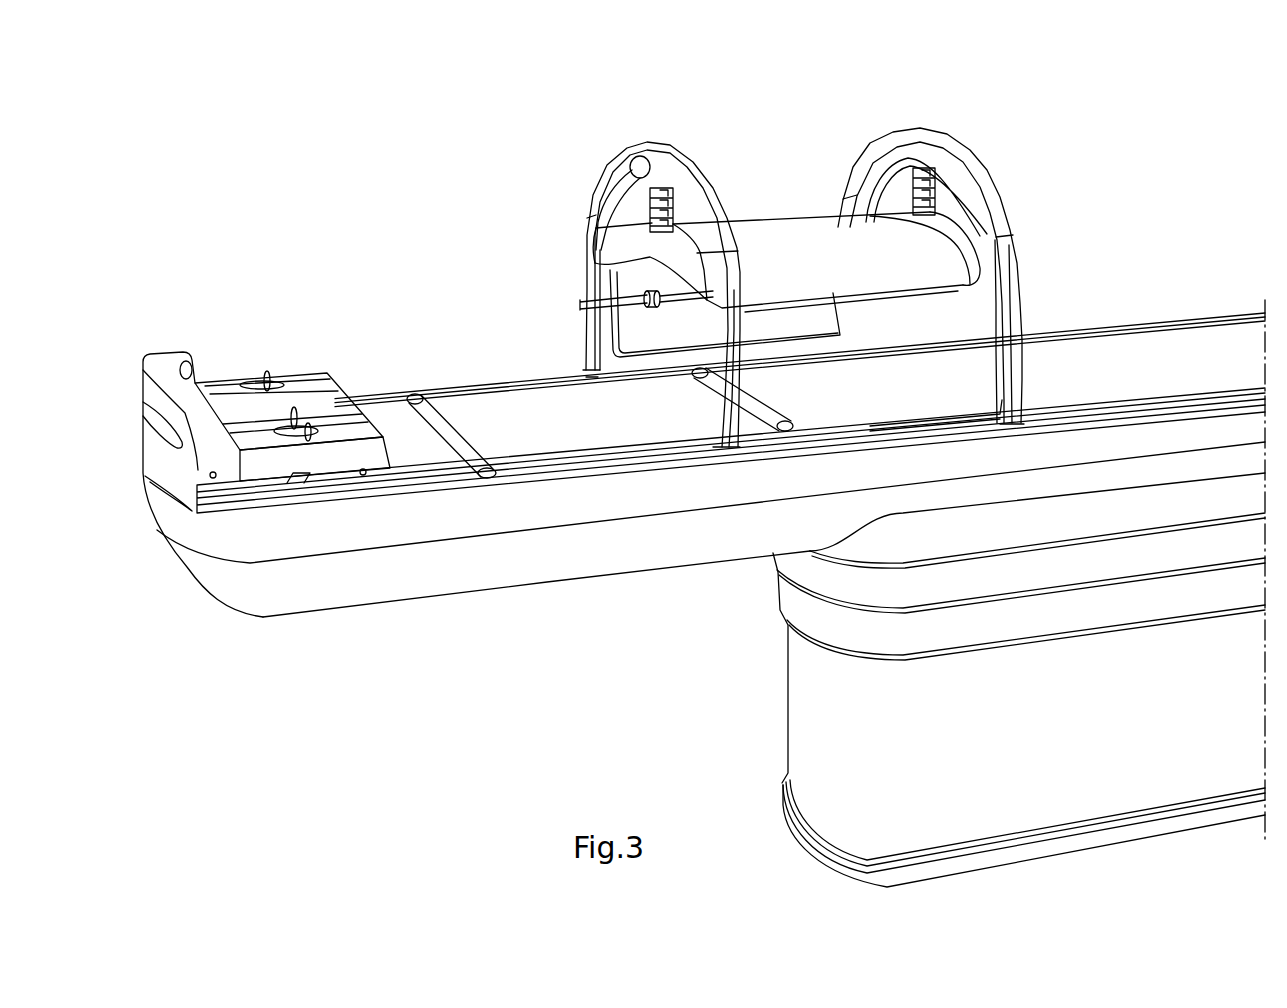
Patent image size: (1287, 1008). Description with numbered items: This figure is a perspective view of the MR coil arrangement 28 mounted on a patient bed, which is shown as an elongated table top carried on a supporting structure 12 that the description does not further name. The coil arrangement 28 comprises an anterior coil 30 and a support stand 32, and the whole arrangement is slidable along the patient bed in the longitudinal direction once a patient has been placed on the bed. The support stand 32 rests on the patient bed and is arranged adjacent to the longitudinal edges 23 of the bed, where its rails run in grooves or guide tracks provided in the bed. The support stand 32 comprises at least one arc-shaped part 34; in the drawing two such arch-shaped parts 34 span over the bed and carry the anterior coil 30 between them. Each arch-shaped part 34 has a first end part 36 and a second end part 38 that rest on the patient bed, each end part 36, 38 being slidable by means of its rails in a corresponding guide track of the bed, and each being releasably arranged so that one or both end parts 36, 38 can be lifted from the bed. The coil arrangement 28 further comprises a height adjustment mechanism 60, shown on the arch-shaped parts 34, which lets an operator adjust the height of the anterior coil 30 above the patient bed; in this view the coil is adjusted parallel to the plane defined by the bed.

The patient table base 12 is at (800, 732).
The longitudinal edges 23 is at (533, 377).
The MR coil arrangement 28 is at (807, 160).
The anterior coil 30 is at (748, 236).
The support stand 32 is at (1003, 214).
The arc-shaped part 34 is at (608, 178).
The first end part 36 is at (791, 344).
The second end part 38 is at (905, 421).
The height adjustment mechanism 60 is at (933, 188).